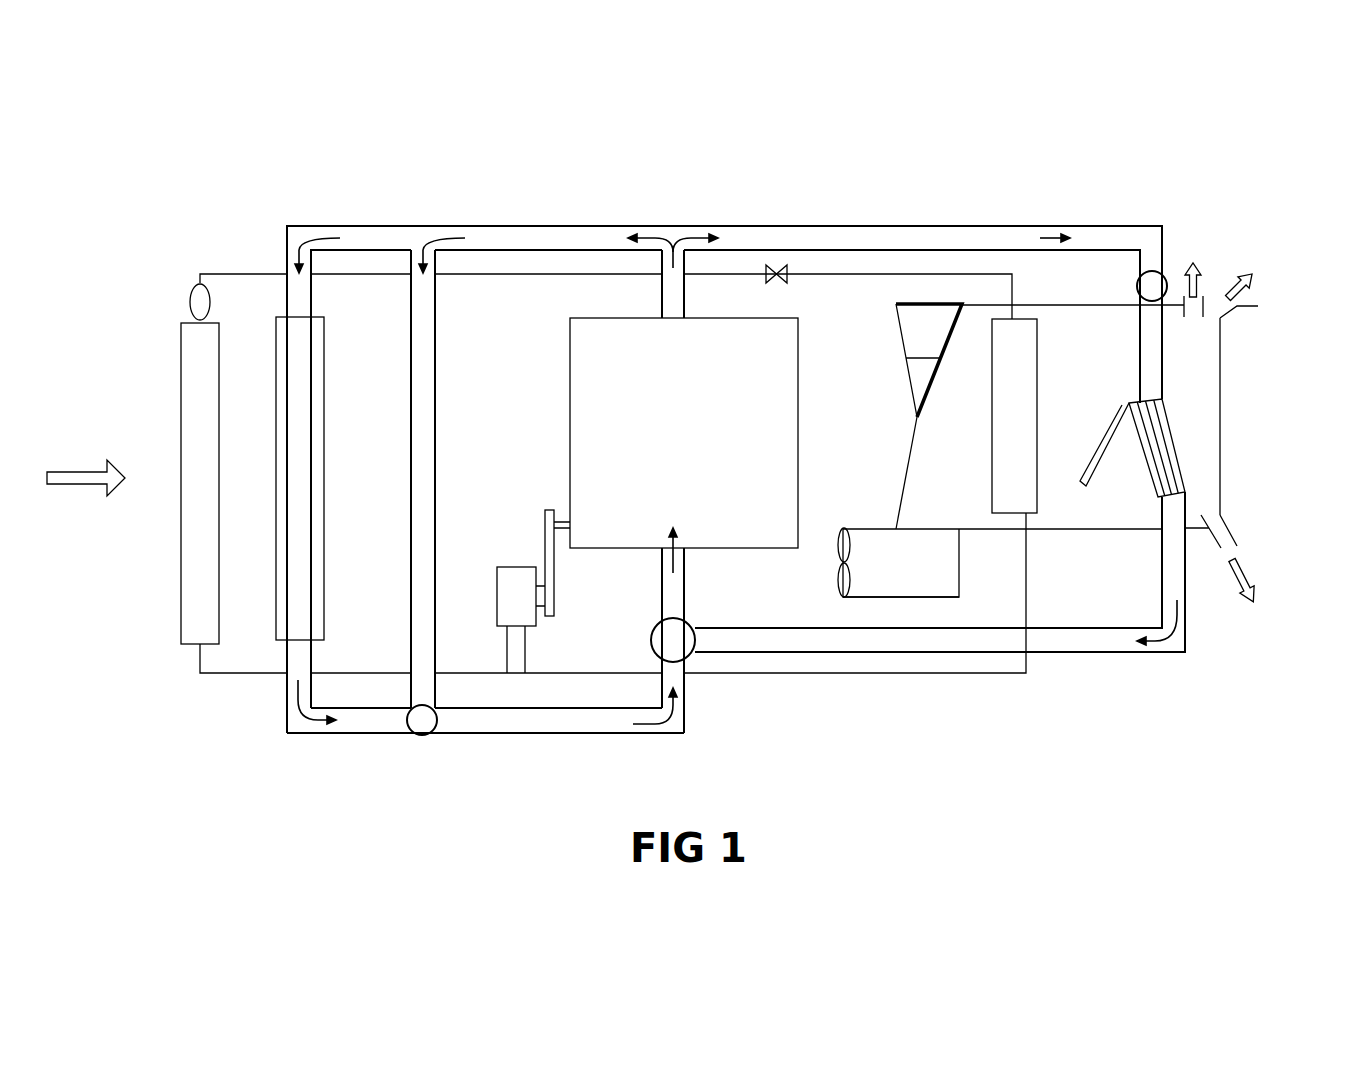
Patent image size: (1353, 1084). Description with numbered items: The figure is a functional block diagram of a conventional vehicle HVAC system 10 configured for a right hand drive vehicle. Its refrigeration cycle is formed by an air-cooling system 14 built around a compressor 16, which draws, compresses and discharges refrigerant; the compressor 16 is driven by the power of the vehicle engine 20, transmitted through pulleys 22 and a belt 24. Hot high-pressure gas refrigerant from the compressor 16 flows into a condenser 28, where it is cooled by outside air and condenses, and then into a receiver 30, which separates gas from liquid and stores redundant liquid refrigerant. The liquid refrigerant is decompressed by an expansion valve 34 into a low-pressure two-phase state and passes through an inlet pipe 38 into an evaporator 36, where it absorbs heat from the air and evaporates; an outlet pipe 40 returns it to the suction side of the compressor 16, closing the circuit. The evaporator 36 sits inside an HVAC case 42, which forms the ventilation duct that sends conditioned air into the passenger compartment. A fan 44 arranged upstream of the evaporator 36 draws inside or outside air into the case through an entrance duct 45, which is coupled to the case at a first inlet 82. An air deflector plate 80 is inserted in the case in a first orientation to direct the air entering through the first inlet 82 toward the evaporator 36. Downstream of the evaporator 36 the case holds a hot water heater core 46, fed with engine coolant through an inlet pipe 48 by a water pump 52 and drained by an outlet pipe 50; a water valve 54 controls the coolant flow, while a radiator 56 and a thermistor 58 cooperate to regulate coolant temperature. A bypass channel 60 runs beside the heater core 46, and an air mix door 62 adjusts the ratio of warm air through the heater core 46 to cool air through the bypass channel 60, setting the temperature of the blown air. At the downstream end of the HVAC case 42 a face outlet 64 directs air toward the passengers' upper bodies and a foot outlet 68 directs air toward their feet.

The vehicle HVAC system 10 is at (943, 180).
The air-cooling system 14 is at (179, 265).
The compressor 16 is at (517, 577).
The vehicle engine 20 is at (649, 433).
The pulleys 22 is at (540, 607).
The belt 24 is at (550, 557).
The condenser 28 is at (190, 388).
The receiver 30 is at (190, 300).
The expansion valve 34 is at (778, 283).
The evaporator 36 is at (1030, 337).
The inlet pipe 38 is at (1012, 282).
The outlet pipe 40 is at (1026, 577).
The HVAC case 42 is at (905, 472).
The fan 44 is at (836, 550).
The entrance duct 45 is at (873, 597).
The hot water heater core 46 is at (1160, 439).
The inlet pipe 48 is at (1152, 388).
The outlet pipe 50 is at (1170, 565).
The water pump 52 is at (673, 640).
The water valve 54 is at (1152, 287).
The radiator 56 is at (315, 392).
The thermistor 58 is at (422, 720).
The bypass channel 60 is at (1203, 300).
The air mix door 62 is at (1107, 440).
The face outlet 64 is at (1237, 306).
The foot outlet 68 is at (1235, 547).
The air deflector plate 80 is at (910, 358).
The first inlet 82 is at (922, 577).